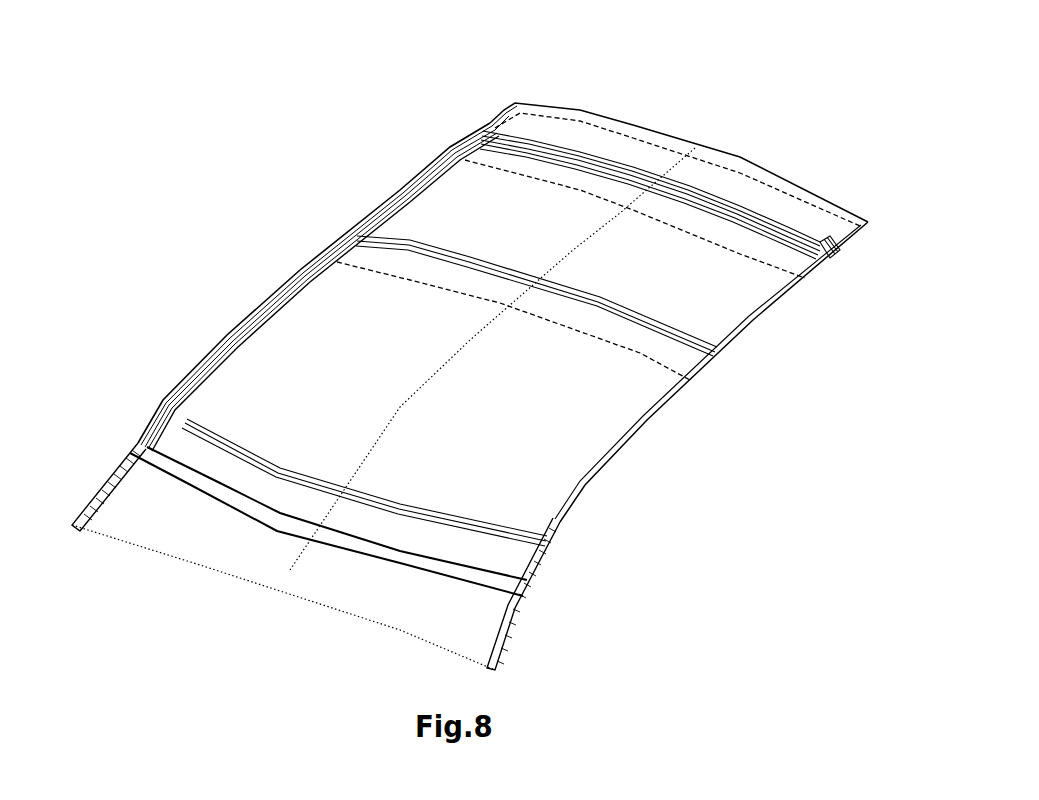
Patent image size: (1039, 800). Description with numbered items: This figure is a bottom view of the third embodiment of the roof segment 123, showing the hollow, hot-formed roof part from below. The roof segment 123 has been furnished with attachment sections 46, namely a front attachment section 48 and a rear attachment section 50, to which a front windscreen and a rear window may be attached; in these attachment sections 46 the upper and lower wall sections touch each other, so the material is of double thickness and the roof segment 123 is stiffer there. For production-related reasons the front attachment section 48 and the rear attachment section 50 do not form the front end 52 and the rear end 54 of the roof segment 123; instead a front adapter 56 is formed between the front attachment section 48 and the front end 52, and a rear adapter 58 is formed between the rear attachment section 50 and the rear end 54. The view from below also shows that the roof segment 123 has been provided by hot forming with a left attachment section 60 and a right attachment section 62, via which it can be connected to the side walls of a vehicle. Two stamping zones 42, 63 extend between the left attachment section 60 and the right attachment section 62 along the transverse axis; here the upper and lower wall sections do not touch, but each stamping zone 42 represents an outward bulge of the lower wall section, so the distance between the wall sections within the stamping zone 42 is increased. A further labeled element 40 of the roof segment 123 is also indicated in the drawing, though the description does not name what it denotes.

The roof segment 123 is at (138, 258).
The front end 52 is at (220, 617).
The rear end 54 is at (690, 97).
The roof panel 40 is at (289, 571).
The rear adapter 58 is at (592, 137).
The right attachment section 62 is at (300, 270).
The left attachment section 60 is at (647, 420).
The front adapter 56 is at (493, 615).
The stamping zone 42 is at (501, 342).
The cross member reinforcement 63 is at (490, 158).
The attachment section 46 is at (485, 384).
The front attachment section 48 is at (523, 582).
The rear attachment section 50 is at (822, 240).